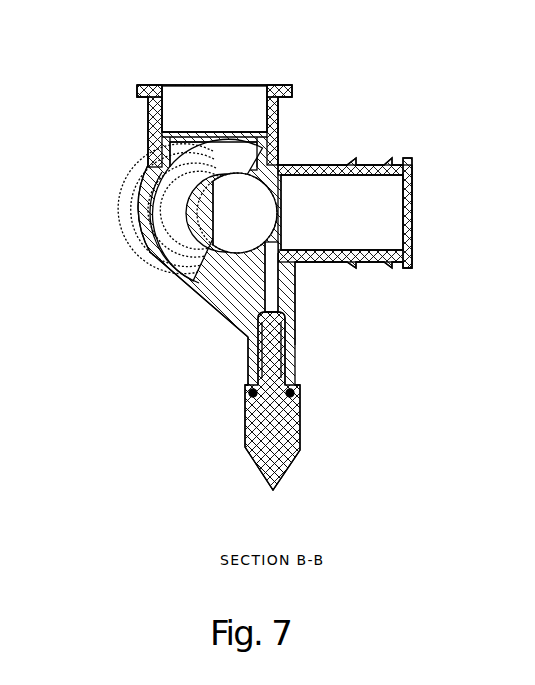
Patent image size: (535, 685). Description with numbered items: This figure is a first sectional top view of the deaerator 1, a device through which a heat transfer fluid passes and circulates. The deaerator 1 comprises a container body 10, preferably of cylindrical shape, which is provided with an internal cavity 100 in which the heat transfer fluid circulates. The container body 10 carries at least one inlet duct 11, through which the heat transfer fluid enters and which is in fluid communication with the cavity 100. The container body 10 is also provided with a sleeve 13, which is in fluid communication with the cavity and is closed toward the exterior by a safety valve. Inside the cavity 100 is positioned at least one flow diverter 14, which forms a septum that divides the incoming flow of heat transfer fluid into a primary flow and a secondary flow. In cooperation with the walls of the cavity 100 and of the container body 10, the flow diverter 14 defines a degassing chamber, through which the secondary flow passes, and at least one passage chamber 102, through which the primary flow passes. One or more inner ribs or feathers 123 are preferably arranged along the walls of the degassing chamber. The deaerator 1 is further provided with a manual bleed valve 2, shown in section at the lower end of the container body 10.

The deaerator 1 is at (263, 246).
The container body 10 is at (228, 308).
The inlet duct 11 is at (390, 262).
The sleeve 13 is at (150, 118).
The flow diverter 14 is at (202, 250).
The cavity 100 is at (252, 196).
The passage chamber 102 is at (262, 228).
The inner ribs or feathers 123 is at (165, 170).
The manual bleed valve 2 is at (243, 448).